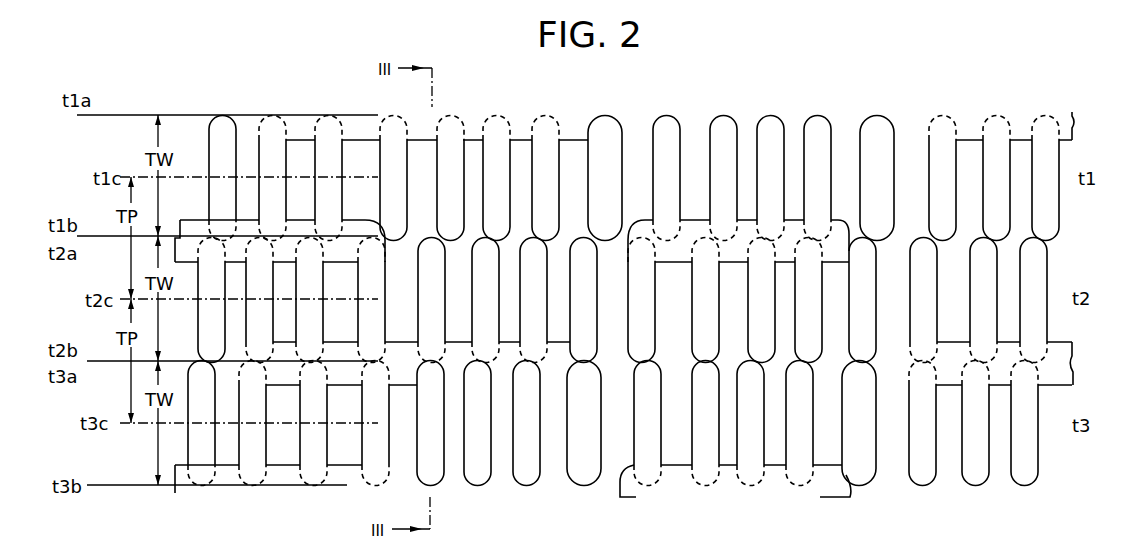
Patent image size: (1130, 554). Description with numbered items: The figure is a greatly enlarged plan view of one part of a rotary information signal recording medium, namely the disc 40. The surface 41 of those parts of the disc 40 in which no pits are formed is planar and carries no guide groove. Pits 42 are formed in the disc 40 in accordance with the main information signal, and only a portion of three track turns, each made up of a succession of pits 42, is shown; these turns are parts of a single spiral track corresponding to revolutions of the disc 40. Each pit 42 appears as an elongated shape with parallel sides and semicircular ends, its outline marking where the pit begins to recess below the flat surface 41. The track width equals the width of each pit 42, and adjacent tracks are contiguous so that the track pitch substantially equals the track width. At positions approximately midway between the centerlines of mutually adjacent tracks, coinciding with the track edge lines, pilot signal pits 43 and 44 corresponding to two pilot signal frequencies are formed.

The disc 40 is at (771, 68).
The surface 41 is at (696, 142).
The pits 42 is at (660, 126).
The pilot signal pits 43 is at (746, 228).
The pilot signal pits 44 is at (560, 115).